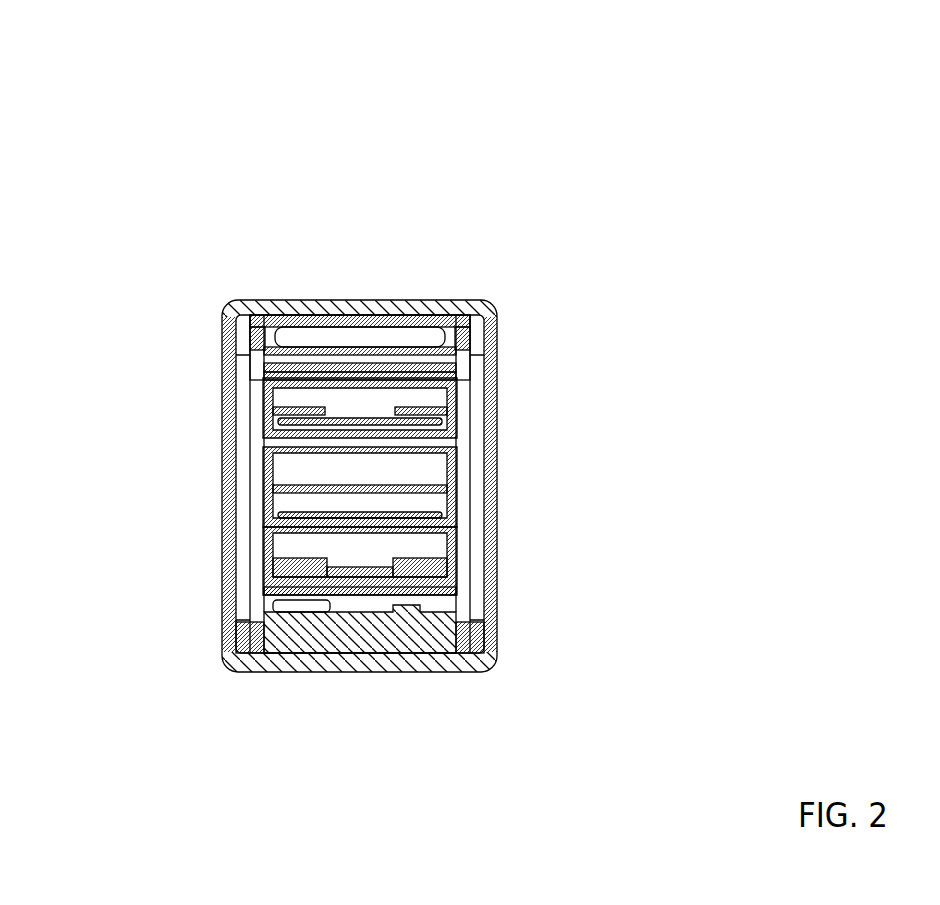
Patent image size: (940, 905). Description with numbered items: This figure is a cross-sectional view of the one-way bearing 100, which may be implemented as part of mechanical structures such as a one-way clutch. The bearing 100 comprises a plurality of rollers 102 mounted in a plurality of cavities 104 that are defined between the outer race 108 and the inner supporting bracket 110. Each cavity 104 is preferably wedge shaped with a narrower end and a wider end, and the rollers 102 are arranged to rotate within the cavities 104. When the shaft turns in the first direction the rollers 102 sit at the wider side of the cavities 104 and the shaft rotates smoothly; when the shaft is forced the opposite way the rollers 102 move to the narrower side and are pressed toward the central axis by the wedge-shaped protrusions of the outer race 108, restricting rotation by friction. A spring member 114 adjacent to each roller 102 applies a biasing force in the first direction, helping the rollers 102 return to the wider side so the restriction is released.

The one-way bearing 100 is at (736, 100).
The rollers 102 is at (422, 618).
The cavities 104 is at (303, 545).
The outer race 108 is at (297, 306).
The inner supporting bracket 110 is at (456, 322).
The spring member 114 is at (358, 570).